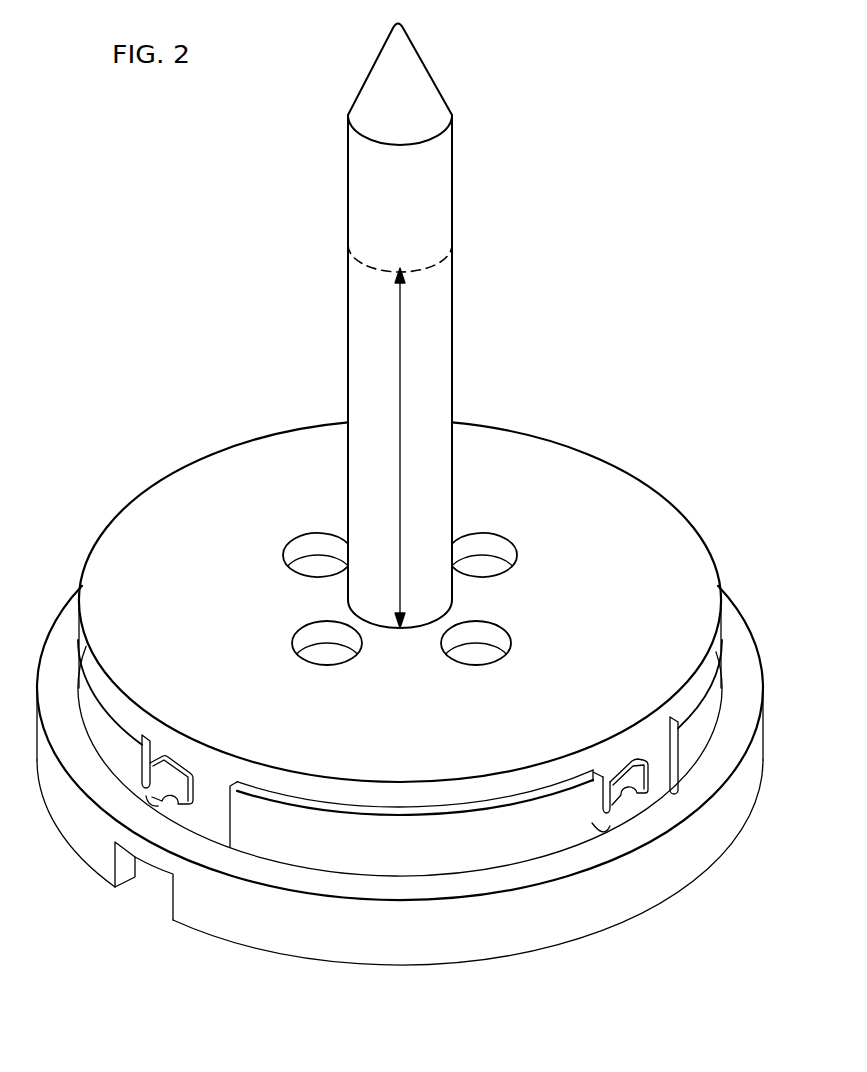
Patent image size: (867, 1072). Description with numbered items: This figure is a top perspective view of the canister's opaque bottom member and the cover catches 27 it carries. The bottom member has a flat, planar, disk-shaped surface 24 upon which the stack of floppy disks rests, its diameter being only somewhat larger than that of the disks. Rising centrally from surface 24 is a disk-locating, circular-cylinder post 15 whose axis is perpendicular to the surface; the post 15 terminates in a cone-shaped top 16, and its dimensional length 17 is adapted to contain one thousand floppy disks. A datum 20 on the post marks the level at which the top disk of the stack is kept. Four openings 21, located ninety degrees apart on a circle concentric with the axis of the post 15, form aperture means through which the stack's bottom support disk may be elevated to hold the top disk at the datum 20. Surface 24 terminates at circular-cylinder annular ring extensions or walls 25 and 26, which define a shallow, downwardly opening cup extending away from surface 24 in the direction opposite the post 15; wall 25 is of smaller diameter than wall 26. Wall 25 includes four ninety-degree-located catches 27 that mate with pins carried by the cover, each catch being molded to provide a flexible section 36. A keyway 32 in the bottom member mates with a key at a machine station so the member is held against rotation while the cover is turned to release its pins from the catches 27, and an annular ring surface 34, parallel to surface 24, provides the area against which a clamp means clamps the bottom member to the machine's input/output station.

The post 15 is at (360, 337).
The cone-shaped top 16 is at (422, 88).
The dimensional length 17 is at (400, 393).
The datum 20 is at (427, 267).
The openings 21 is at (333, 635).
The flat, planar surface 24 is at (589, 476).
The wall 25 is at (415, 858).
The wall 26 is at (547, 932).
The catches 27 is at (172, 783).
The keyway 32 is at (141, 895).
The annular ring surface 34 is at (747, 672).
The flexible section 36 is at (608, 817).